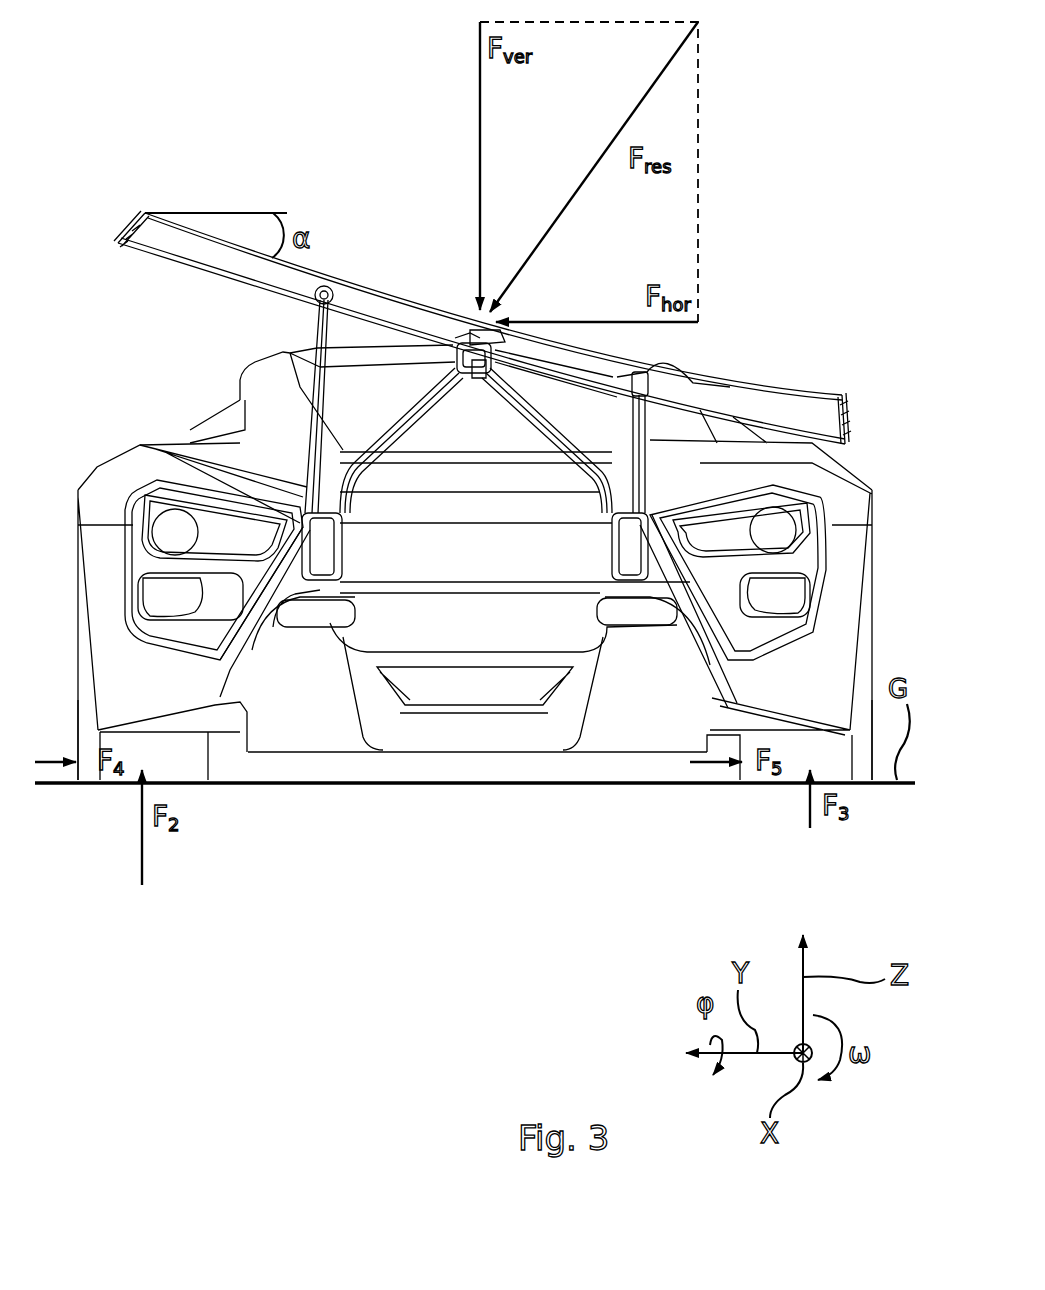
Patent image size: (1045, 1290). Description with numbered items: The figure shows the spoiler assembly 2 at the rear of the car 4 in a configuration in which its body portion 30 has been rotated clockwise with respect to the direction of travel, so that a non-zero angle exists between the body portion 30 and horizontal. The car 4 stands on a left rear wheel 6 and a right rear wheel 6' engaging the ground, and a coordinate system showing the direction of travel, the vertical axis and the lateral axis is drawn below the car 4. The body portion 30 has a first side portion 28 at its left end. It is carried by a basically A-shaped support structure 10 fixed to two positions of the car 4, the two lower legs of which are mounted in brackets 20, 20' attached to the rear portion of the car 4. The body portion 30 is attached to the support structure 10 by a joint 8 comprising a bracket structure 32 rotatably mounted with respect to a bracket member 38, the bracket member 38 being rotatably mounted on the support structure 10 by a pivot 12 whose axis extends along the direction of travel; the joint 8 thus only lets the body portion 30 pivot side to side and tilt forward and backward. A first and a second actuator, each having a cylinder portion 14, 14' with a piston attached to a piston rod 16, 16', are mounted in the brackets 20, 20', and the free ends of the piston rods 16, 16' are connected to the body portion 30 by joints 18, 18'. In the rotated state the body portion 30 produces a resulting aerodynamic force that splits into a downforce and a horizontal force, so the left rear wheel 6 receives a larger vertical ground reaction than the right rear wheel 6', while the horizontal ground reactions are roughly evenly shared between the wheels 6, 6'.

The spoiler assembly 2 is at (414, 212).
The car 4 is at (100, 458).
The left rear wheel 6 is at (70, 684).
The right rear wheel 6' is at (899, 689).
The joint 8 is at (463, 325).
The support structure 10 is at (378, 392).
The pivot 12 is at (462, 372).
The cylinder portion 14 is at (211, 528).
The cylinder portion 14' is at (796, 550).
The piston rod 16 is at (246, 406).
The piston rod 16' is at (695, 433).
The joint 18 is at (348, 256).
The joint 18' is at (688, 357).
The bracket 20 is at (380, 548).
The bracket 20' is at (568, 546).
The first side portion 28 is at (125, 243).
The body portion 30 is at (780, 395).
The bracket structure 32 is at (478, 352).
The bracket member 38 is at (482, 374).